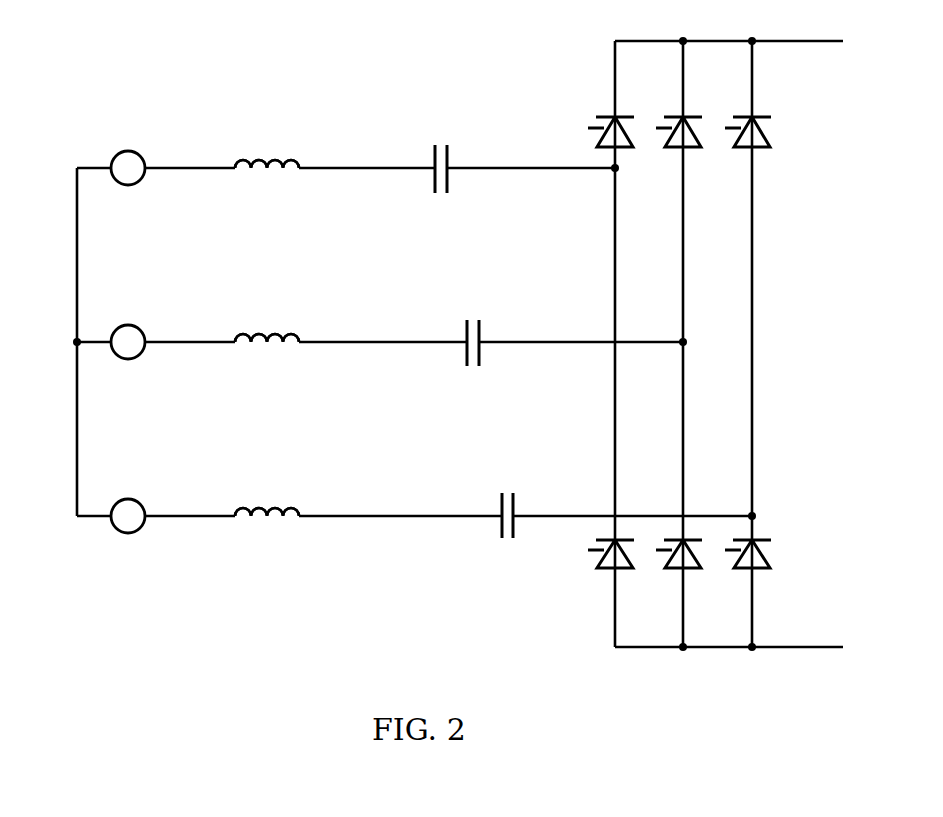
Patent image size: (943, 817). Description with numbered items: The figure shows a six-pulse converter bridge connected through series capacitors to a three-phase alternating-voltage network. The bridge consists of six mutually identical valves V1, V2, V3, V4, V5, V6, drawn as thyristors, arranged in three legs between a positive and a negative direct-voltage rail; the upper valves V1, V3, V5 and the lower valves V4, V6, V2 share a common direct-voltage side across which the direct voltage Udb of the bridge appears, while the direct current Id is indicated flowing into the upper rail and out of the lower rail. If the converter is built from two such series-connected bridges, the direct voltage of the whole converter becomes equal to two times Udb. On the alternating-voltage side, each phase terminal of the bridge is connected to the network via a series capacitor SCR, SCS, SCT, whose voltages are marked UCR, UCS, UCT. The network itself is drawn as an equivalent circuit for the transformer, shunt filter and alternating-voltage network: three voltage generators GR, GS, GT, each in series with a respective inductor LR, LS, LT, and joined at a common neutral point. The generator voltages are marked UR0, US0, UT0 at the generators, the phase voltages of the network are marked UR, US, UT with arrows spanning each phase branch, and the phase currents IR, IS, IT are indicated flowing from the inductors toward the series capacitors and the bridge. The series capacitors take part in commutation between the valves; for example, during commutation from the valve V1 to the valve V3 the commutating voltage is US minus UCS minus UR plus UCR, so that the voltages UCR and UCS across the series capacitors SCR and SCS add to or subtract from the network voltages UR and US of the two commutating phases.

The voltage generator GR is at (115, 158).
The voltage generator GS is at (115, 332).
The voltage generator GT is at (115, 506).
The inductor LR is at (252, 170).
The inductor LS is at (252, 344).
The inductor LT is at (252, 518).
The series capacitor SCR is at (434, 180).
The series capacitor SCS is at (466, 354).
The series capacitor SCT is at (501, 528).
The valve V1 is at (613, 117).
The valve V2 is at (742, 568).
The valve V3 is at (681, 117).
The valve V4 is at (605, 568).
The valve V5 is at (750, 117).
The valve V6 is at (673, 568).
The phase R voltage UR is at (320, 132).
The phase S voltage US is at (320, 302).
The phase T voltage UT is at (320, 477).
The phase R generator voltage UR0 is at (127, 200).
The phase S generator voltage US0 is at (126, 374).
The phase T generator voltage UT0 is at (126, 549).
The series capacitor voltage UCR is at (438, 128).
The series capacitor voltage UCS is at (470, 303).
The phase T capacitor voltage UCT is at (505, 478).
The phase R current IR is at (417, 180).
The phase S current IS is at (417, 353).
The phase T current IT is at (417, 527).
The direct current Id is at (828, 636).
The direct voltage across the six-pulse bridge Udb is at (797, 647).